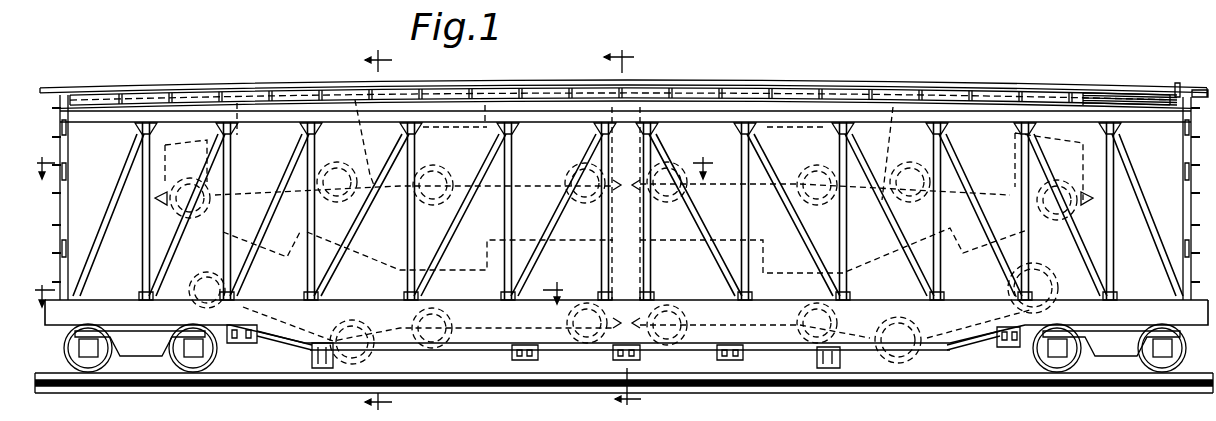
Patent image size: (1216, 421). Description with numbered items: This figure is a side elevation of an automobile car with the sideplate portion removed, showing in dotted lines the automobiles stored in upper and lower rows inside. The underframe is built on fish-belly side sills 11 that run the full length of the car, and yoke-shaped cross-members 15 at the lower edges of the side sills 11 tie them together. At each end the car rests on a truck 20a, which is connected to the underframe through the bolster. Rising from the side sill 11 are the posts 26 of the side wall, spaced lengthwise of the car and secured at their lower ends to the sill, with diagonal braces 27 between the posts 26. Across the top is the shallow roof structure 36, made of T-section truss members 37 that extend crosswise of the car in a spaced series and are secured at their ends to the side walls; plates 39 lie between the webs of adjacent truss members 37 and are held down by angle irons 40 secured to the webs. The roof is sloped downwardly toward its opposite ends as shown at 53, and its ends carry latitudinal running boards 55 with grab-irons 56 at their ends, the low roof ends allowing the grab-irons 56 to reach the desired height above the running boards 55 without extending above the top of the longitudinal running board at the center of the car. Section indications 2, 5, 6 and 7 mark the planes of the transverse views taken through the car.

The section line 2- 2 is at (306, 290).
The section line 5- 5 is at (378, 228).
The section line 6- 6 is at (377, 159).
The section line 7- 7 is at (622, 227).
The fish-belly side sill 11 is at (553, 352).
The cross-member 15 is at (243, 347).
The truck 20a is at (1125, 344).
The post 26 is at (142, 241).
The diagonal brace 27 is at (117, 183).
The roof structure 36 is at (795, 88).
The truss member 37 is at (500, 88).
The plate 39 is at (747, 97).
The angle iron 40 is at (422, 90).
The downwardly sloped roof end 53 is at (197, 90).
The latitudinal running board 55 is at (1087, 100).
The grab-iron 56 is at (1178, 86).